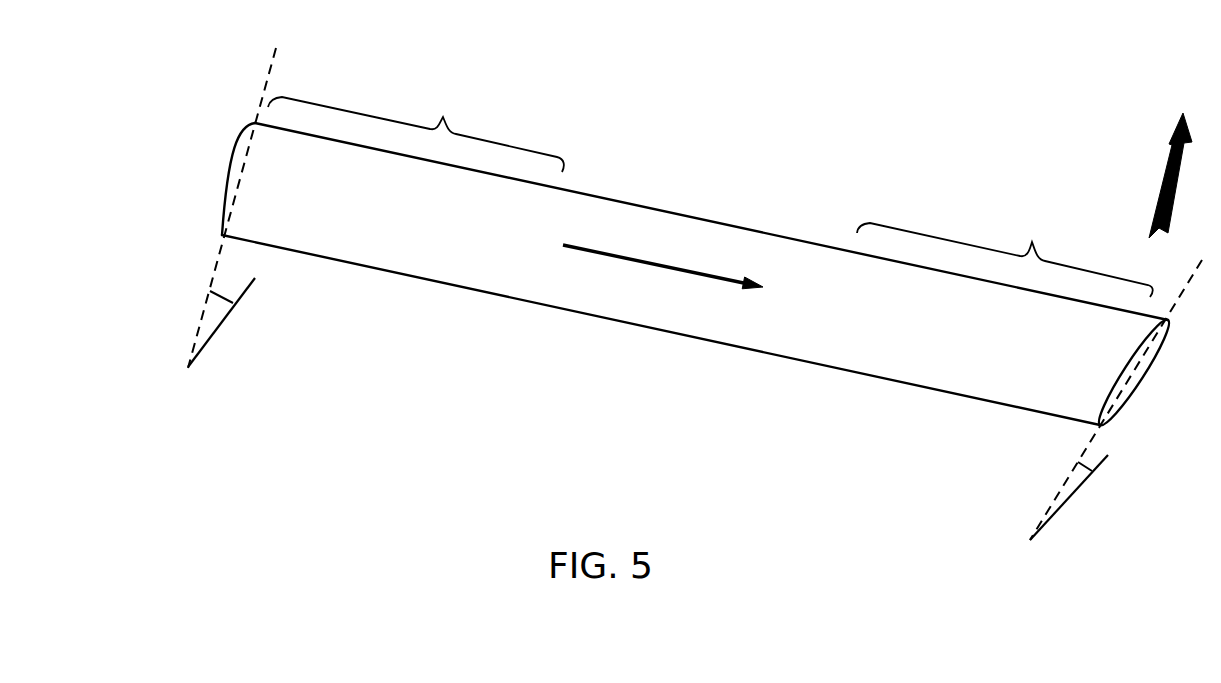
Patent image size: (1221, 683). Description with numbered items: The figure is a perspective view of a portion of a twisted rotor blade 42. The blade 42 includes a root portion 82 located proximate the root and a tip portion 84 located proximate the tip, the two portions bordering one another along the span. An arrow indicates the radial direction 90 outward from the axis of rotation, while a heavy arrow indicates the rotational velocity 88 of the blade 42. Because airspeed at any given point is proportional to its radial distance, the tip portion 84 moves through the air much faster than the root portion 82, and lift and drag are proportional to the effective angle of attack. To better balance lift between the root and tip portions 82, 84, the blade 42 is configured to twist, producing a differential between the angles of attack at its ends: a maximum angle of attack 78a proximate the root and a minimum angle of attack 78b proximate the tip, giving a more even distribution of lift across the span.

The rotor blade 42 is at (675, 232).
The root portion 82 is at (443, 117).
The tip portion 84 is at (1032, 242).
The radial direction 90 is at (658, 265).
The rotational velocity 88 is at (1162, 188).
The maximum angle of attack 78a is at (220, 292).
The minimum angle of attack 78b is at (1088, 462).